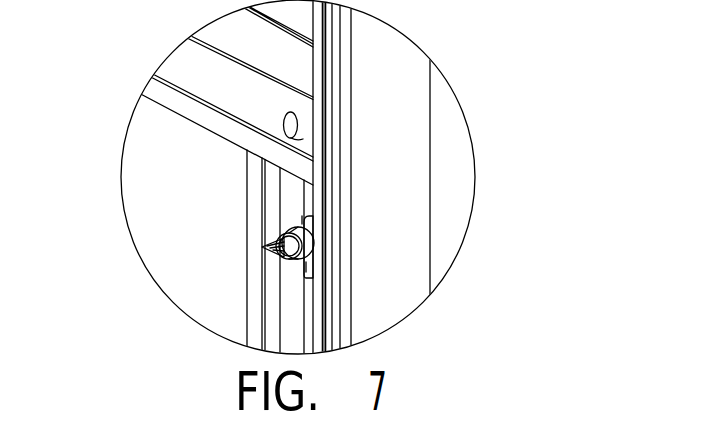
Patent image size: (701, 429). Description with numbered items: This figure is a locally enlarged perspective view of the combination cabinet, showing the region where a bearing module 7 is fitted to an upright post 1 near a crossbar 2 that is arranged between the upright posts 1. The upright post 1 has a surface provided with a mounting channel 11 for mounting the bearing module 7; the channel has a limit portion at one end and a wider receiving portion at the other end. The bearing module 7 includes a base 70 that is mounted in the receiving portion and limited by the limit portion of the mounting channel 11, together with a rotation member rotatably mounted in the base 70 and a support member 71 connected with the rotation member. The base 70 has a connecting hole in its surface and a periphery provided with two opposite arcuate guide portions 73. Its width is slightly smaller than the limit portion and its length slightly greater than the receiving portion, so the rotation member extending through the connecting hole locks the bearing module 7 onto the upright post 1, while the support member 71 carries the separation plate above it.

The upright post 1 is at (400, 103).
The mounting channel 11 is at (328, 163).
The crossbar 2 is at (225, 72).
The bearing module 7 is at (293, 237).
The base 70 is at (312, 250).
The support member 71 is at (263, 245).
The arcuate guide portion 73 is at (310, 224).